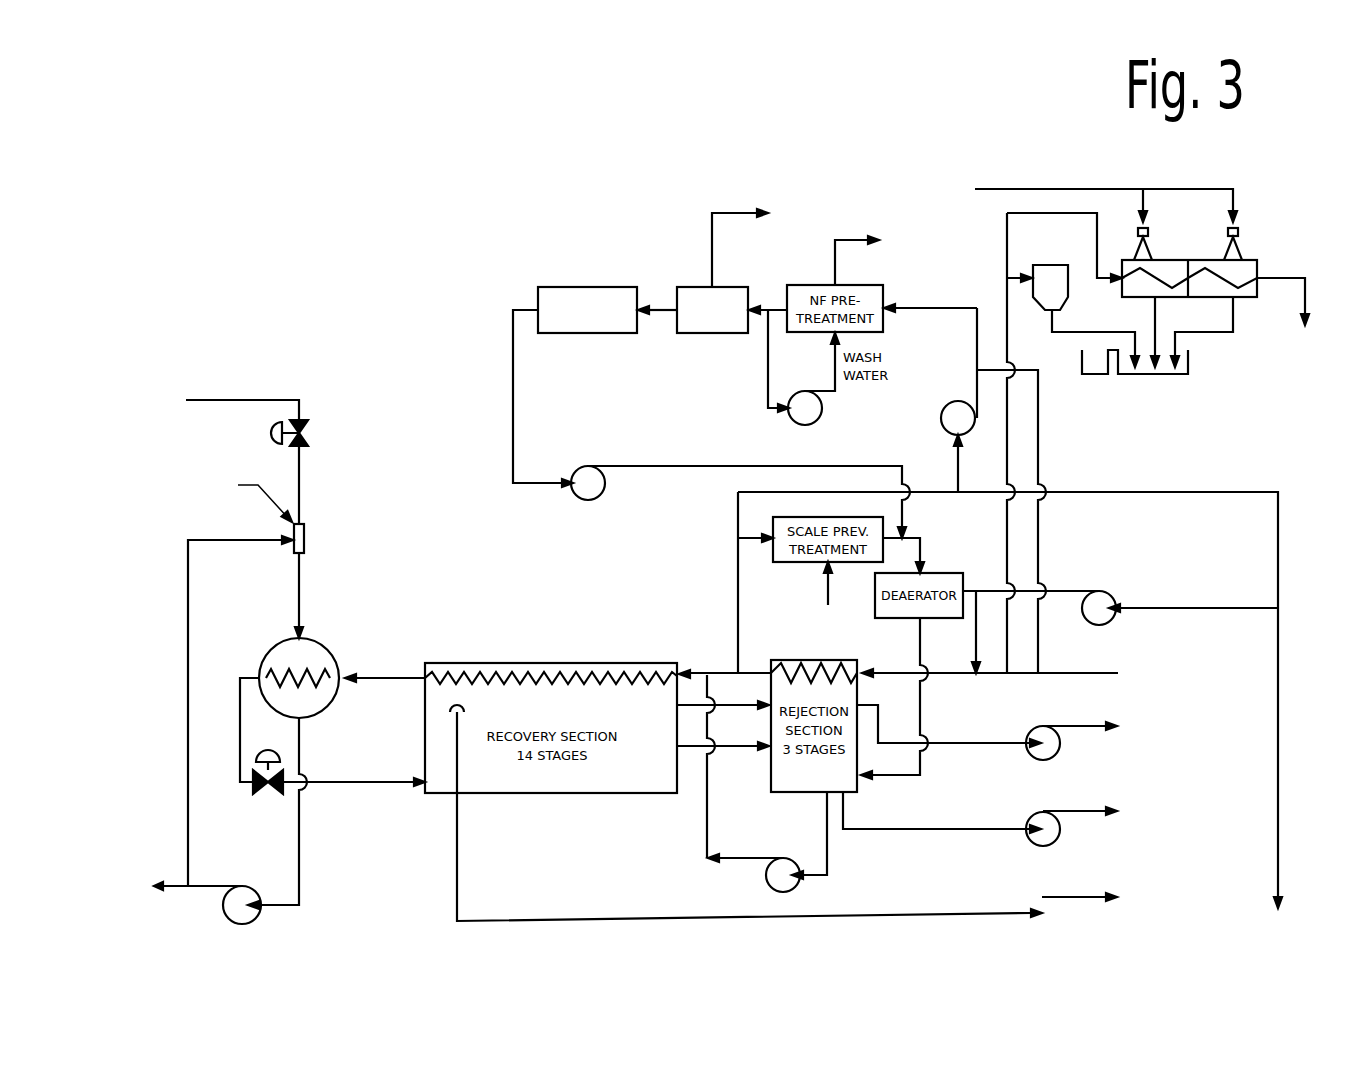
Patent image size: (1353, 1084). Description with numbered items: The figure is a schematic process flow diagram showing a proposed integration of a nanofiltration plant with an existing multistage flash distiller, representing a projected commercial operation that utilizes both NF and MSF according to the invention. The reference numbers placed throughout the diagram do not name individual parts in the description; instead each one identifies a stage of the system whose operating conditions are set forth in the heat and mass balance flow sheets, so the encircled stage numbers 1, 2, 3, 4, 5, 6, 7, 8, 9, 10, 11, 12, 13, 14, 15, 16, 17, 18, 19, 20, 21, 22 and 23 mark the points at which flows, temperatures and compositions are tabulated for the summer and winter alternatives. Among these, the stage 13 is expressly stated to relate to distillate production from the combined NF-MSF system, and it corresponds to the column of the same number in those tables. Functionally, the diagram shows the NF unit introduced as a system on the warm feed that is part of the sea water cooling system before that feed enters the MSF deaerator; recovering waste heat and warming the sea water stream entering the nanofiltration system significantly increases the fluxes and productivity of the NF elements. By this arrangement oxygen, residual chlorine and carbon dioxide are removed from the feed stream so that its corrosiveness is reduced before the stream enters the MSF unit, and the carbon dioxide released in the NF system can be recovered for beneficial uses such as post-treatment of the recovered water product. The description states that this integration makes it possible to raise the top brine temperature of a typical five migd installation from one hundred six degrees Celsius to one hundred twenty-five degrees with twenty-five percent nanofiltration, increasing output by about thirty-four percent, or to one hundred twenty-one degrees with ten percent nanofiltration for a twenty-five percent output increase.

The steam supply line to brine heater 1 is at (227, 448).
The condensate recirculation line to desuperheater 2 is at (222, 711).
The brine heater and desuperheater assembly 3 is at (250, 792).
The condensate line with condensate pump 4 is at (256, 821).
The condensate outlet 5 is at (178, 886).
The brine feed line from recovery section to brine heater 6 is at (385, 662).
The brine heater bypass loop with control valve 7 is at (315, 736).
The high pressure distillate line 8 is at (799, 813).
The brine recycle pump 9 is at (784, 842).
The deaerated sea water line to rejection section 10 is at (904, 712).
The sea water recirculating (tempering) pump 11 is at (1120, 601).
The sea water feed line 12 is at (1016, 667).
The distillate production 13 is at (1014, 731).
The blow down pump 14 is at (1006, 817).
The heated brine line to rejection section 15 is at (788, 587).
The vent condenser 16 is at (1132, 428).
The sea water discharge line 17 is at (1010, 700).
The sea water supply line 18 is at (1026, 521).
The NF supply pump 19 is at (930, 383).
The nanofiltration (NF) unit 20 is at (659, 301).
The NF product pump 21 is at (711, 424).
The reject line 22 is at (769, 234).
The waste wash water line 23 is at (906, 245).